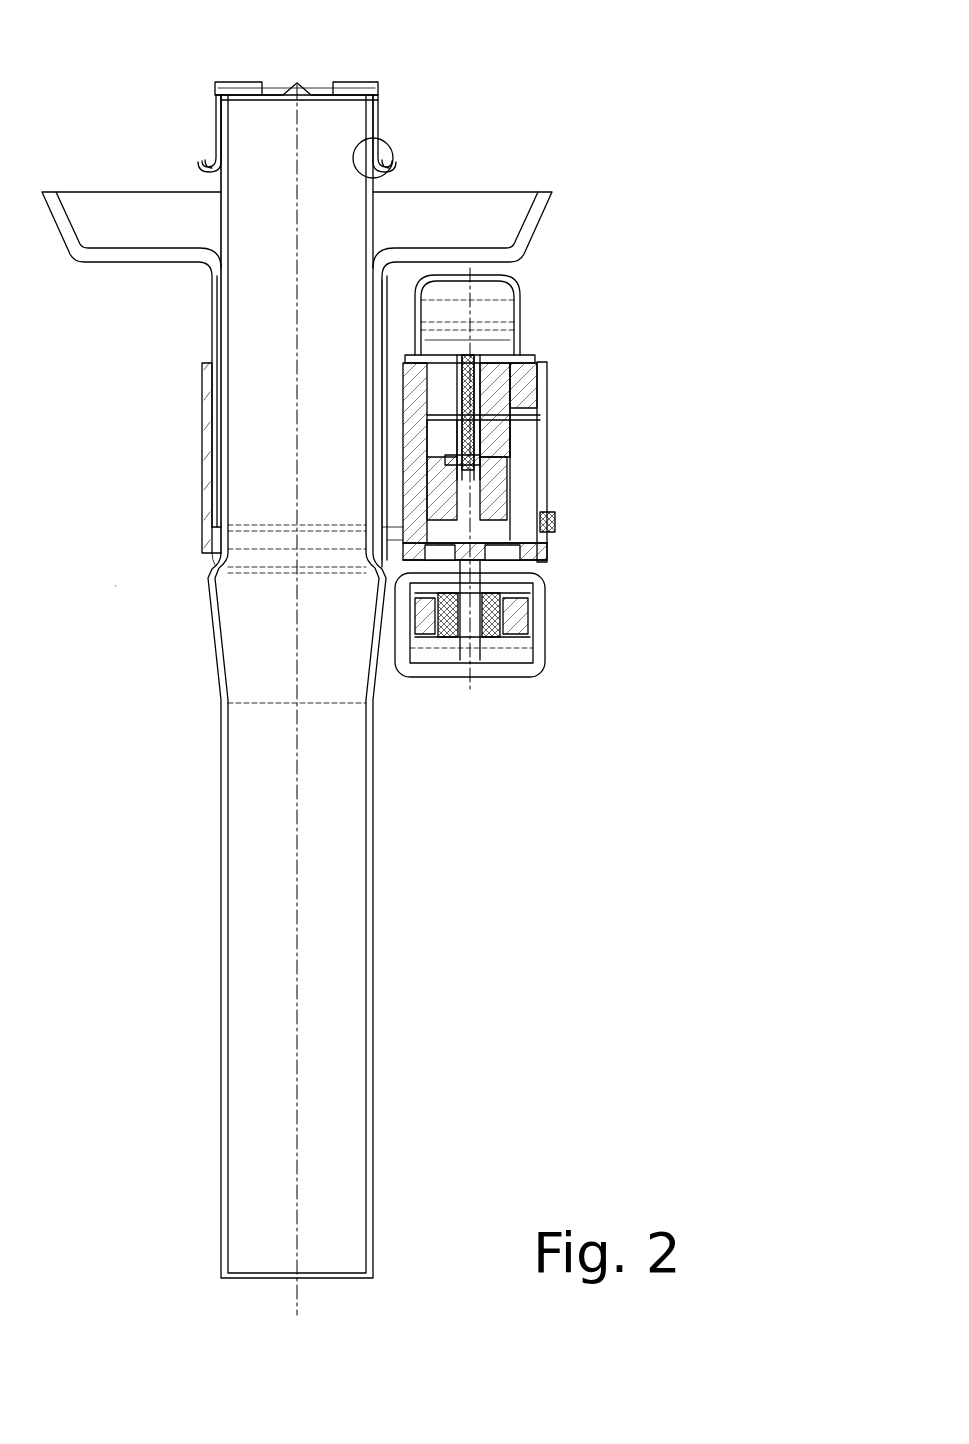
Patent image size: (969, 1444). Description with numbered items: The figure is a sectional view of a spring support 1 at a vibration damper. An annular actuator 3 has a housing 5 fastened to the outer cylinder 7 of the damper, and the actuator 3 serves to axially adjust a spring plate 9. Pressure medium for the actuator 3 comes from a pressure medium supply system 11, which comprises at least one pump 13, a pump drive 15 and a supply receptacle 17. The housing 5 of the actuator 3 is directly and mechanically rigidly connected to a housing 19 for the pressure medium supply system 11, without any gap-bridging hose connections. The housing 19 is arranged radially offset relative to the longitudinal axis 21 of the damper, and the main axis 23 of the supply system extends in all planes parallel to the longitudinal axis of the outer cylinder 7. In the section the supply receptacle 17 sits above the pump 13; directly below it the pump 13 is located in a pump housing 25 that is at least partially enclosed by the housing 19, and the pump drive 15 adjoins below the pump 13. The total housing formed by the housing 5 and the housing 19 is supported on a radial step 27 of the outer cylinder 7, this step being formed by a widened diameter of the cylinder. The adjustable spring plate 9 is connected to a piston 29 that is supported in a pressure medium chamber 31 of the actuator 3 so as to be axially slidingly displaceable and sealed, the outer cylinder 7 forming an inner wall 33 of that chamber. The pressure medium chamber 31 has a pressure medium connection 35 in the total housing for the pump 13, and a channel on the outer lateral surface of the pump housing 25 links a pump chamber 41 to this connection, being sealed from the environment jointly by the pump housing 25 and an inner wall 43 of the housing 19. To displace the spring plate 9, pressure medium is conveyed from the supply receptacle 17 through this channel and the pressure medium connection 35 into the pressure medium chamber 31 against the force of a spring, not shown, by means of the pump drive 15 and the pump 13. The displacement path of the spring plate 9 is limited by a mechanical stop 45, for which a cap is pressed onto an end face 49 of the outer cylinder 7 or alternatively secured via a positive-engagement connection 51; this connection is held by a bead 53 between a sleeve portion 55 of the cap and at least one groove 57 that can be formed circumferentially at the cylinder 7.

The spring support 1 is at (118, 585).
The annular actuator 3 is at (200, 354).
The housing 5 is at (203, 463).
The outer cylinder 7 is at (374, 892).
The spring plate 9 is at (74, 270).
The pressure medium supply system 11 is at (574, 470).
The pump 13 is at (506, 460).
The pump drive 15 is at (523, 625).
The supply receptacle 17 is at (521, 325).
The housing 19 is at (543, 546).
The longitudinal axis 21 is at (299, 1003).
The main axis 23 is at (481, 300).
The pump housing 25 is at (498, 537).
The radial step 27 is at (213, 562).
The piston 29 is at (379, 305).
The pressure medium chamber 31 is at (211, 532).
The inner wall 33 is at (227, 423).
The pressure medium connection 35 is at (388, 532).
The pump chamber 41 is at (498, 440).
The inner wall 43 is at (524, 395).
The mechanical stop 45 is at (394, 158).
The end face 49 is at (243, 103).
The positive-engagement connection 51 is at (388, 150).
The bead 53 is at (214, 160).
The sleeve portion 55 is at (387, 158).
The groove 57 is at (224, 160).